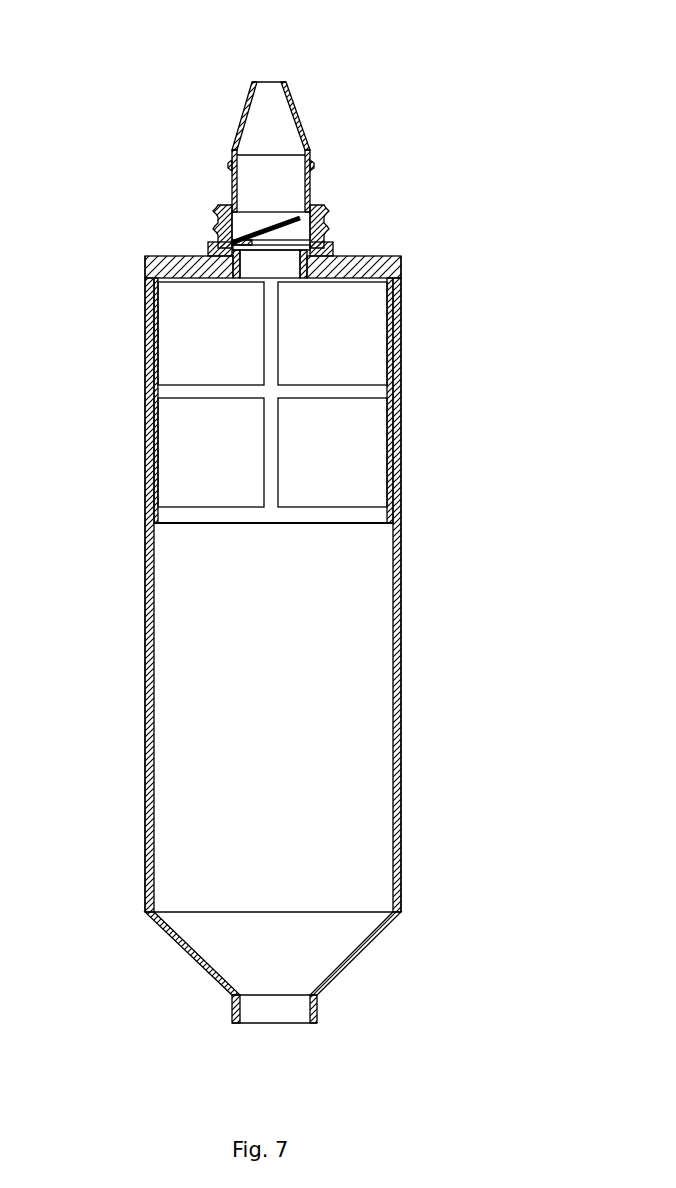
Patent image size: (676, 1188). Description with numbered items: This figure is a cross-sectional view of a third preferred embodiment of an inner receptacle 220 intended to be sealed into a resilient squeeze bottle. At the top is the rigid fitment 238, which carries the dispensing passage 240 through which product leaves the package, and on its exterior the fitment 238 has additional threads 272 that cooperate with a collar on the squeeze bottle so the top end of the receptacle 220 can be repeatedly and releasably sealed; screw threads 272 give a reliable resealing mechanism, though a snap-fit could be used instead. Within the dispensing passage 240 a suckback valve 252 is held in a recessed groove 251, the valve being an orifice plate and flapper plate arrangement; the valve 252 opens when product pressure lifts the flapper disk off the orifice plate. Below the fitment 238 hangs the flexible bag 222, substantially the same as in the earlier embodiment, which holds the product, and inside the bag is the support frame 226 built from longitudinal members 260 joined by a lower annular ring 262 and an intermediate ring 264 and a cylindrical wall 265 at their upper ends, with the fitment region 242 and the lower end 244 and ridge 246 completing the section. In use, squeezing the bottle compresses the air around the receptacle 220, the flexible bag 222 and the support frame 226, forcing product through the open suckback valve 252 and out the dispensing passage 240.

The inner receptacle 220 is at (410, 595).
The flexible bag 222 is at (400, 708).
The support frame 226 is at (330, 385).
The rigid fitment 238 is at (300, 118).
The dispensing passage 240 is at (268, 87).
The cap flange 242 is at (328, 253).
The bottom outlet neck 244 is at (292, 1013).
The tip ridge 246 is at (313, 169).
The seal 251 is at (227, 243).
The suckback valve 252 is at (297, 220).
The insert wall 260 is at (393, 423).
The bottom plate 262 is at (327, 520).
The compartment 264 is at (255, 392).
The plug 265 is at (265, 265).
The threads 272 is at (327, 230).